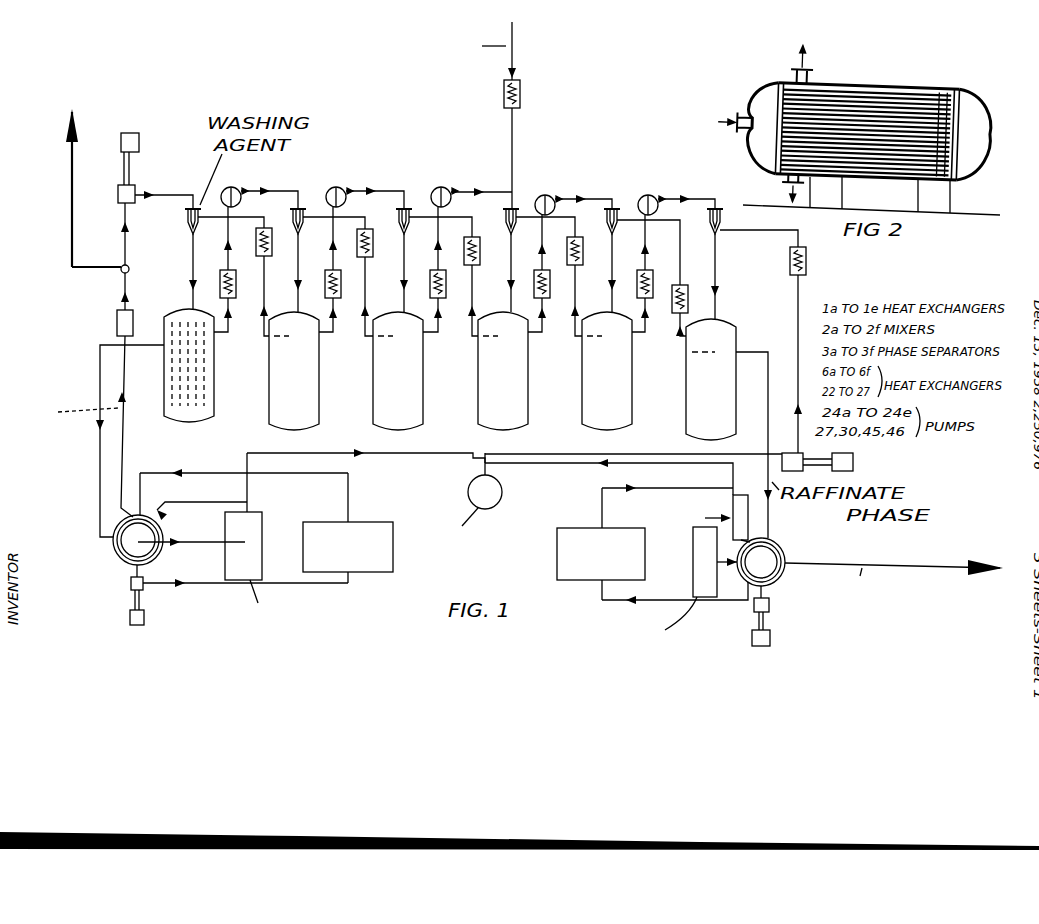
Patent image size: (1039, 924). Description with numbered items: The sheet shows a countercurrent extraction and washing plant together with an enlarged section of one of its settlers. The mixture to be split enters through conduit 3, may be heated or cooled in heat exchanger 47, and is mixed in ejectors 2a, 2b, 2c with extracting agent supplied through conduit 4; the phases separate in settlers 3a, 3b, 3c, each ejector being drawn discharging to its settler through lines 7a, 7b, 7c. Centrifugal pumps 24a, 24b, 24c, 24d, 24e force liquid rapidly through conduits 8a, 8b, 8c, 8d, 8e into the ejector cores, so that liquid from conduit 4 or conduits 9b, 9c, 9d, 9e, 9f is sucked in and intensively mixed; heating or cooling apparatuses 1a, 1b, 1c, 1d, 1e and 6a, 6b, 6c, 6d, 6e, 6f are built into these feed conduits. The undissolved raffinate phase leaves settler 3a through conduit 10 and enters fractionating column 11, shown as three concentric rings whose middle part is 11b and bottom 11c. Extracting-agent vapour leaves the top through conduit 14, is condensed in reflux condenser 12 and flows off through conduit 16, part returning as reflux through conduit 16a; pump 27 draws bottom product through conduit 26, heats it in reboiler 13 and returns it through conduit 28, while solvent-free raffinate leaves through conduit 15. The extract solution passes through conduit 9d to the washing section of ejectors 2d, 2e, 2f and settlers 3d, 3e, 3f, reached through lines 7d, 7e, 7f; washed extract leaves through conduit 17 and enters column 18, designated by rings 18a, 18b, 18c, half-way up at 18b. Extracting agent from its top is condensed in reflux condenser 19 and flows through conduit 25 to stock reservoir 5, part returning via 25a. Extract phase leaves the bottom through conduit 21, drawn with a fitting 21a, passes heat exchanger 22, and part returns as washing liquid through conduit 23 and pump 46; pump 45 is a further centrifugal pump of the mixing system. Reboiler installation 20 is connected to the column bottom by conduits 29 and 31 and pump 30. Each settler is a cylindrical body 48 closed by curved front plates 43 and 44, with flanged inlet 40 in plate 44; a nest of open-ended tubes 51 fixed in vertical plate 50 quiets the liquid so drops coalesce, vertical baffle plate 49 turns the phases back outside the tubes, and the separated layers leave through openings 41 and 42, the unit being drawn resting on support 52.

In FIG. 1, the heat exchanger 1a is at (657, 284).
In FIG. 1, the heat exchanger 1b is at (554, 284).
In FIG. 1, the heat exchanger 1c is at (450, 284).
In FIG. 1, the heat exchanger 1d is at (345, 284).
In FIG. 1, the heat exchanger 1e is at (240, 284).
In FIG. 1, the ejector 2a is at (726, 225).
In FIG. 1, the ejector 2b is at (623, 226).
In FIG. 1, the ejector 2c is at (521, 226).
In FIG. 1, the ejector 2d is at (415, 226).
In FIG. 1, the ejector 2e is at (309, 226).
In FIG. 1, the ejector 2f is at (203, 226).
In FIG. 1, the feed conduit 3 is at (512, 168).
In FIG. 1, the settler 3a is at (736, 383).
In FIG. 1, the settler 3b is at (632, 381).
In FIG. 1, the settler 3c is at (528, 381).
In FIG. 1, the settler 3d is at (423, 381).
In FIG. 1, the settler 3e is at (319, 381).
In FIG. 1, the settler 3f is at (214, 381).
In FIG. 1, the extracting agent conduit 4 is at (798, 365).
In FIG. 1, the stock reservoir 5 is at (502, 497).
In FIG. 1, the heat exchanger 6a is at (810, 261).
In FIG. 1, the heat exchanger 6b is at (690, 299).
In FIG. 1, the heat exchanger 6c is at (578, 237).
In FIG. 1, the heat exchanger 6d is at (475, 237).
In FIG. 1, the heat exchanger 6e is at (367, 229).
In FIG. 1, the heat exchanger 6f is at (266, 228).
In FIG. 1, the mixer outlet line 7a is at (726, 276).
In FIG. 1, the mixer outlet line 7b is at (622, 273).
In FIG. 1, the mixer outlet line 7c is at (520, 273).
In FIG. 1, the mixer outlet line 7d is at (414, 273).
In FIG. 1, the mixer outlet line 7e is at (308, 273).
In FIG. 1, the mixer outlet line 7f is at (202, 271).
In FIG. 1, the conduit 8a is at (674, 255).
In FIG. 1, the conduit 8b is at (570, 252).
In FIG. 1, the conduit 8c is at (467, 252).
In FIG. 1, the conduit 8d is at (364, 252).
In FIG. 1, the conduit 8e is at (258, 252).
In FIG. 1, the conduit 9b is at (662, 278).
In FIG. 1, the conduit 9c is at (558, 276).
In FIG. 1, the conduit 9d is at (453, 276).
In FIG. 1, the conduit 9e is at (348, 276).
In FIG. 1, the conduit 9f is at (242, 276).
In FIG. 1, the conduit 10 is at (754, 445).
In FIG. 1, the fractionating column 11 is at (775, 541).
In FIG. 1, the middle part of column 11b is at (782, 553).
In FIG. 1, the bottom of column 11c is at (777, 576).
In FIG. 1, the reflux condenser 12 is at (692, 572).
In FIG. 1, the reboiler 13 is at (556, 562).
In FIG. 1, the conduit 14 is at (725, 569).
In FIG. 1, the conduit 15 is at (888, 569).
In FIG. 1, the conduit 16 is at (566, 466).
In FIG. 1, the reflux conduit 16a is at (741, 518).
In FIG. 1, the conduit 17 is at (87, 469).
In FIG. 1, the column 18 is at (161, 604).
In FIG. 1, the top of column 18a is at (116, 550).
In FIG. 1, the middle part of column 18b is at (130, 567).
In FIG. 1, the bottom of column 18c is at (133, 596).
In FIG. 1, the reflux condenser 19 is at (262, 525).
In FIG. 1, the reboiler installation 20 is at (393, 550).
In FIG. 1, the conduit 21 is at (71, 182).
In FIG. 1, the valve 21a is at (129, 273).
In FIG. 1, the heat exchanger 22 is at (116, 318).
In FIG. 1, the conduit 23 is at (133, 252).
In FIG. 1, the centrifugal pump 24a is at (646, 193).
In FIG. 1, the centrifugal pump 24b is at (543, 193).
In FIG. 1, the centrifugal pump 24c is at (438, 188).
In FIG. 1, the centrifugal pump 24d is at (333, 188).
In FIG. 1, the centrifugal pump 24e is at (228, 188).
In FIG. 1, the conduit 25 is at (389, 456).
In FIG. 1, the reflux conduit 25a is at (176, 499).
In FIG. 1, the conduit 26 is at (176, 539).
In FIG. 1, the pump 27 is at (765, 623).
In FIG. 1, the conduit 28 is at (661, 497).
In FIG. 1, the conduit 29 is at (222, 587).
In FIG. 1, the pump 30 is at (144, 618).
In FIG. 1, the conduit 31 is at (325, 479).
In FIG. 2, the inlet 40 is at (748, 134).
In FIG. 2, the opening 41 is at (812, 72).
In FIG. 2, the opening 42 is at (785, 190).
In FIG. 2, the curved front plate 43 is at (986, 154).
In FIG. 2, the curved front plate 44 is at (752, 108).
In FIG. 1, the centrifugal pump 45 is at (798, 457).
In FIG. 1, the centrifugal pump 46 is at (139, 141).
In FIG. 1, the heat exchanger 47 is at (529, 94).
In FIG. 2, the cylindrical body 48 is at (928, 90).
In FIG. 2, the vertical baffle plate 49 is at (962, 126).
In FIG. 2, the vertical plate 50 is at (788, 77).
In FIG. 2, the nest of tubes 51 is at (847, 88).
In FIG. 2, the support 52 is at (940, 186).